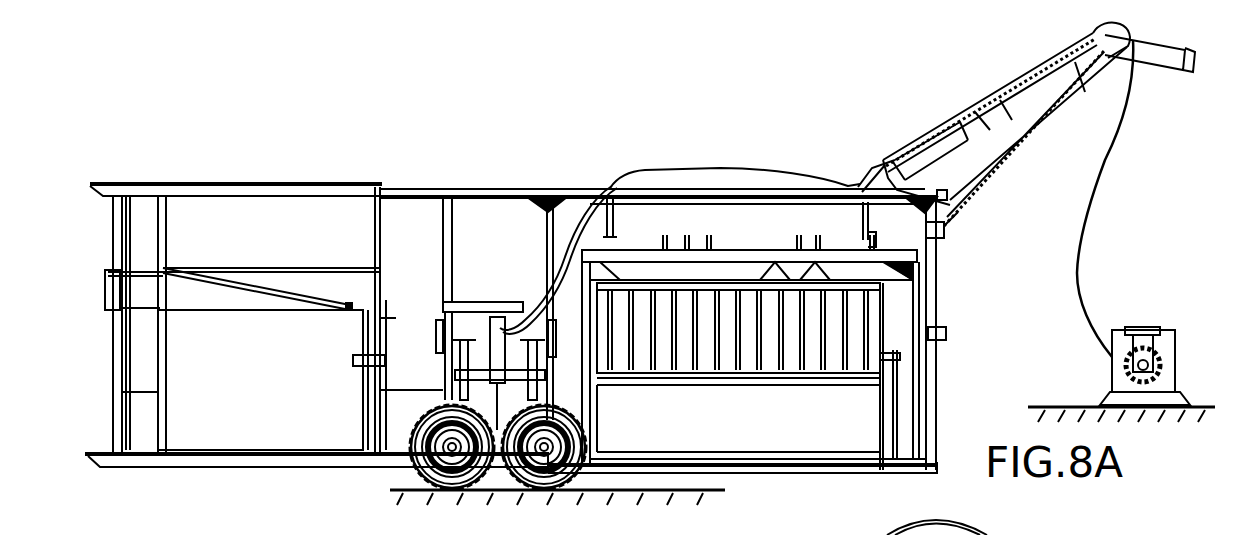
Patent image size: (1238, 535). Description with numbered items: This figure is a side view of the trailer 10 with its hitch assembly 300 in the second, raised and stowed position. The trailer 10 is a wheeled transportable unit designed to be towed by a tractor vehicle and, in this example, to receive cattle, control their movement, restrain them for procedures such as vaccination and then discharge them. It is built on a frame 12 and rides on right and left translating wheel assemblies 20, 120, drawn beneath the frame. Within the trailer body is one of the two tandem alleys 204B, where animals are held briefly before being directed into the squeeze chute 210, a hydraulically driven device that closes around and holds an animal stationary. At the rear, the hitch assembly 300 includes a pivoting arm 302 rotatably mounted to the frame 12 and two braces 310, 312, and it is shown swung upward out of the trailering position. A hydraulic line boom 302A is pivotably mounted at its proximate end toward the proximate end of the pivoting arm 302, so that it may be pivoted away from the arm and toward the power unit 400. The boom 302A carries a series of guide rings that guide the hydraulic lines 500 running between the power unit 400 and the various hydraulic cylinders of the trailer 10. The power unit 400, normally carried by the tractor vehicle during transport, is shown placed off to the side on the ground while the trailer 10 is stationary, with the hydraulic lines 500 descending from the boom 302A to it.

The trailer 10 is at (716, 151).
The frame 12 is at (495, 180).
The right translating wheel assembly 20 is at (594, 486).
The left translating wheel assembly 120 is at (557, 497).
The tandem alley 204B is at (290, 389).
The squeeze chute 210 is at (719, 243).
The hitch assembly 300 is at (994, 522).
The pivoting arm 302 is at (1014, 134).
The hydraulic line boom 302A is at (985, 115).
The brace 310 is at (960, 216).
The brace 312 is at (976, 254).
The power unit 400 is at (1116, 330).
The hydraulic lines 500 is at (1078, 305).